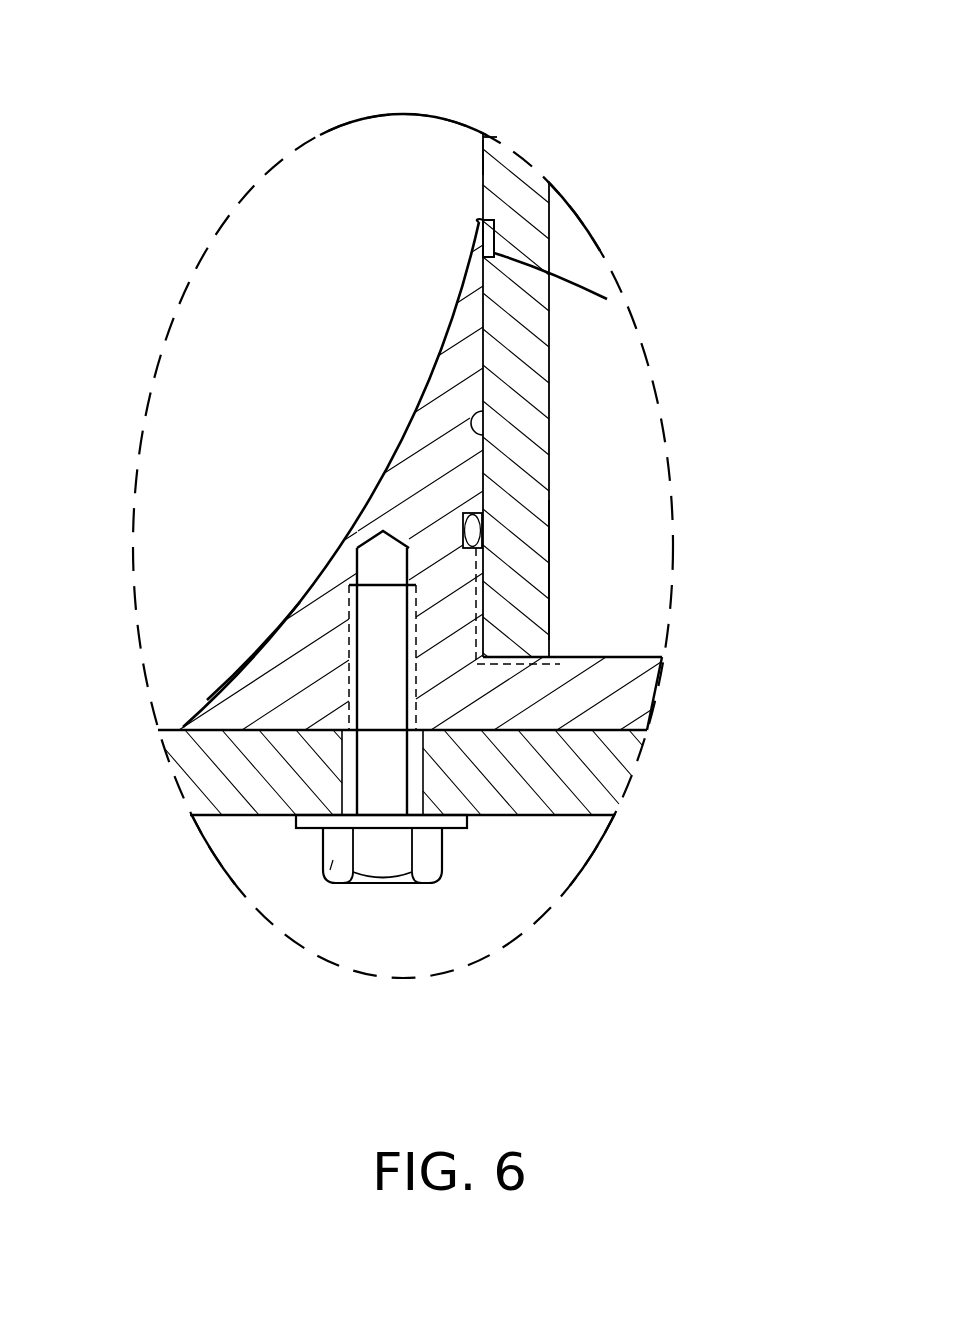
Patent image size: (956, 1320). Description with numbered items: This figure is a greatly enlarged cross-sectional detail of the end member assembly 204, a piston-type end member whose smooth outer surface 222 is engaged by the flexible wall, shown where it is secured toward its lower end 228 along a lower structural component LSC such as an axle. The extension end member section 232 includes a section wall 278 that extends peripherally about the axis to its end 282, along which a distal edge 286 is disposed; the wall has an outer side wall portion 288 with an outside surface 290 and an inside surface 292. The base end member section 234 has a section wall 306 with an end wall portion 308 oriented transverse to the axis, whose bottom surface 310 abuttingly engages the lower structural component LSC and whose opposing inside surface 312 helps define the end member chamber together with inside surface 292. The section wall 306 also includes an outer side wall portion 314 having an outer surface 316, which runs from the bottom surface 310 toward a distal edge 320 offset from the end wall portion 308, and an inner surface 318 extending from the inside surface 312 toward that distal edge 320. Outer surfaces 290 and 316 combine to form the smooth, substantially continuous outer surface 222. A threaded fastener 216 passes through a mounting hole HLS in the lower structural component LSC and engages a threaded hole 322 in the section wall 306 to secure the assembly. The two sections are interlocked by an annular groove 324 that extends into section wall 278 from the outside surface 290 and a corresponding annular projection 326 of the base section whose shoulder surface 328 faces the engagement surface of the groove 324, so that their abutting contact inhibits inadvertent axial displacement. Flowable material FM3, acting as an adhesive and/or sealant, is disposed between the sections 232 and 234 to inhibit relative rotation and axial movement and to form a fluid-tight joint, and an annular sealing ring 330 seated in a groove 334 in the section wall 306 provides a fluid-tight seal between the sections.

The end member assembly 204 is at (313, 177).
The threaded fastener 216 is at (332, 858).
The outer surface 222 is at (435, 310).
The lower end 228 is at (150, 570).
The end member section 232 is at (550, 200).
The end member section 234 is at (380, 473).
The section wall 278 is at (531, 367).
The end 282 is at (641, 515).
The distal edge 286 is at (632, 657).
The outer side wall portion 288 is at (497, 175).
The outside surface 290 is at (487, 137).
The inside surface 292 is at (549, 393).
The section wall 306 is at (258, 672).
The end wall portion 308 is at (622, 690).
The bottom surface 310 is at (615, 815).
The inside surface 312 is at (640, 650).
The outer side wall portion 314 is at (440, 432).
The outer surface 316 is at (290, 612).
The inner surface 318 is at (483, 435).
The distal edge 320 is at (479, 220).
The threaded hole 322 is at (372, 548).
The annular groove 324 is at (509, 242).
The annular projection 326 is at (477, 248).
The shoulder surface 328 is at (607, 299).
The annular sealing ring 330 is at (470, 527).
The groove 334 is at (477, 547).
The lower structural component LSC is at (225, 773).
The mounting hole HLS is at (338, 778).
The flowable material FM3 is at (484, 660).